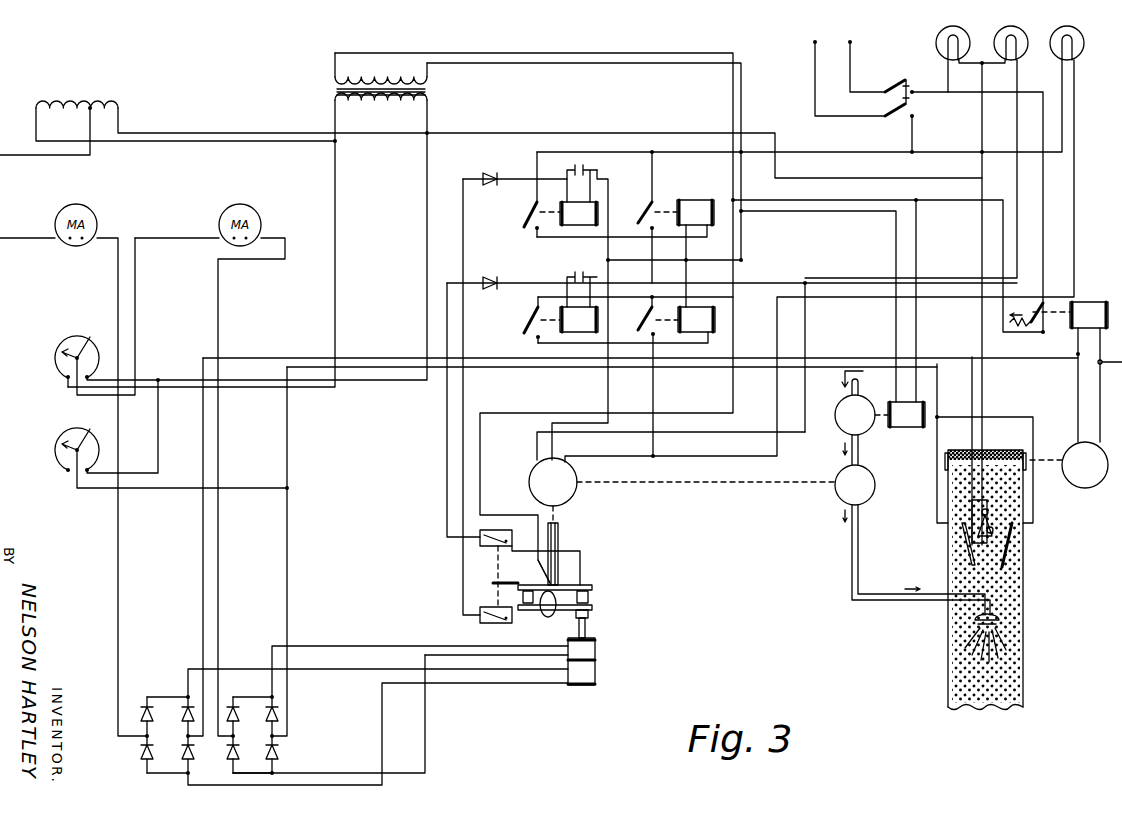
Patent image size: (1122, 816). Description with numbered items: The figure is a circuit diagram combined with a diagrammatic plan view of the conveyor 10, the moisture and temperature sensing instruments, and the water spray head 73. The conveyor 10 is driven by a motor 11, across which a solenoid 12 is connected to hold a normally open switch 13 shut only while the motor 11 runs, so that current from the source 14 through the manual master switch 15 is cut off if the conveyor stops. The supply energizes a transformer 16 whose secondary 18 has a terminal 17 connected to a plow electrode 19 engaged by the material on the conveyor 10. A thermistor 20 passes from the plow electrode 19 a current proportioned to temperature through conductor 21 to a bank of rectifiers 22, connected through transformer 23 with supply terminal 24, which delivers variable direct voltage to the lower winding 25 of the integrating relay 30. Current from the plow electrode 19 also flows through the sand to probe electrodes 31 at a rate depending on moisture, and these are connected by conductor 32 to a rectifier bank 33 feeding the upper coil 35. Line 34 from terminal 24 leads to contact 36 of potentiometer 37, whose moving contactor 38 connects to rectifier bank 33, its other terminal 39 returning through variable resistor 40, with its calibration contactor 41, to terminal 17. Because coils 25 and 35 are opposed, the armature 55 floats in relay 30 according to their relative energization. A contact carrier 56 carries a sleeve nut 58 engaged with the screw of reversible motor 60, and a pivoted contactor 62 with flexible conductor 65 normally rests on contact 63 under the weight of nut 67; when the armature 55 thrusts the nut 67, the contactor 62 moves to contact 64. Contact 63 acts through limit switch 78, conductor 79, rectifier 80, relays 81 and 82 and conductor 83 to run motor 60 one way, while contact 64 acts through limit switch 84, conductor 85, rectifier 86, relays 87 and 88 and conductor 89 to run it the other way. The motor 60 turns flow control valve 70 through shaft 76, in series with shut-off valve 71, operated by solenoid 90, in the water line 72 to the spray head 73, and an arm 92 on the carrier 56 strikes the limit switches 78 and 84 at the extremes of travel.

The conveyor 10 is at (1020, 508).
The motor 11 is at (1086, 480).
The solenoid 12 is at (1088, 306).
The switch 13 is at (1040, 326).
The source 14 is at (840, 48).
The master switch 15 is at (884, 113).
The transformer 16 is at (430, 83).
The terminal 17 is at (430, 133).
The secondary 18 is at (405, 110).
The plow electrode 19 is at (990, 518).
The thermistor 20 is at (996, 531).
The conductor 21 is at (202, 550).
The bank of rectifiers 22 is at (168, 733).
The transformer 23 is at (112, 104).
The terminal 24 is at (337, 143).
The lower winding 25 is at (596, 680).
The integrating relay 30 is at (615, 669).
The probe electrodes 31 is at (962, 560).
The conductor 32 is at (886, 366).
The rectifier bank 33 is at (252, 733).
The line 34 is at (336, 305).
The upper coil 35 is at (596, 652).
The contact 36 is at (63, 380).
The potentiometer 37 is at (64, 338).
The moving contactor 38 is at (84, 338).
The terminal 39 is at (95, 378).
The variable resistor 40 is at (60, 468).
The moving contactor 41 is at (172, 451).
The armature 55 is at (586, 630).
The contact carrier 56 is at (592, 585).
The sleeve nut 58 is at (559, 540).
The reversible motor 60 is at (530, 486).
The contactor 62 is at (592, 608).
The contact 63 is at (540, 580).
The contact 64 is at (588, 597).
The flexible conductor 65 is at (546, 614).
The nut 67 is at (588, 616).
The flow control valve 70 is at (876, 488).
The valve 71 is at (838, 410).
The water line 72 is at (859, 563).
The spray head 73 is at (1000, 616).
The shaft 76 is at (792, 484).
The limit switch 78 is at (498, 624).
The conductor 79 is at (464, 398).
The rectifier 80 is at (490, 170).
The relay 81 is at (582, 232).
The relay 82 is at (697, 208).
The conductor 83 is at (806, 347).
The limit switch 84 is at (506, 538).
The conductor 85 is at (446, 433).
The rectifier 86 is at (490, 274).
The relay 87 is at (556, 334).
The relay 88 is at (716, 324).
The conductor 89 is at (654, 392).
The solenoid 90 is at (900, 432).
The arm 92 is at (493, 583).